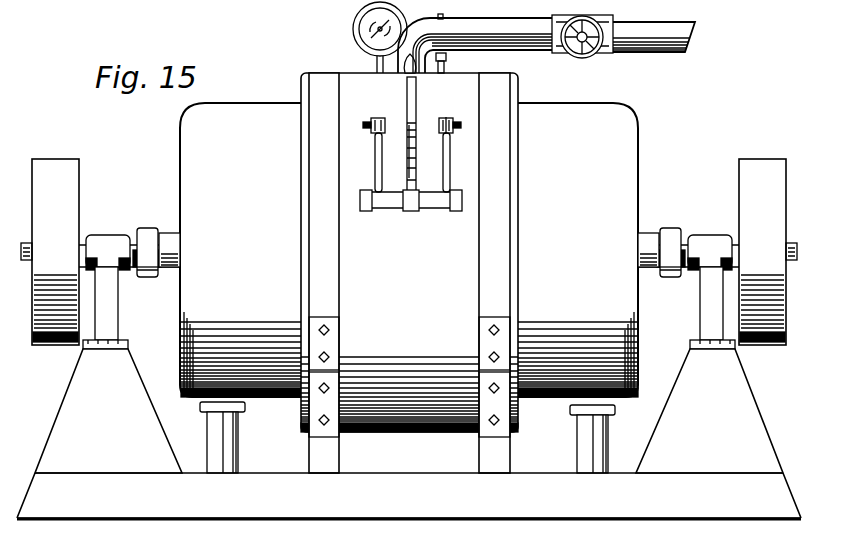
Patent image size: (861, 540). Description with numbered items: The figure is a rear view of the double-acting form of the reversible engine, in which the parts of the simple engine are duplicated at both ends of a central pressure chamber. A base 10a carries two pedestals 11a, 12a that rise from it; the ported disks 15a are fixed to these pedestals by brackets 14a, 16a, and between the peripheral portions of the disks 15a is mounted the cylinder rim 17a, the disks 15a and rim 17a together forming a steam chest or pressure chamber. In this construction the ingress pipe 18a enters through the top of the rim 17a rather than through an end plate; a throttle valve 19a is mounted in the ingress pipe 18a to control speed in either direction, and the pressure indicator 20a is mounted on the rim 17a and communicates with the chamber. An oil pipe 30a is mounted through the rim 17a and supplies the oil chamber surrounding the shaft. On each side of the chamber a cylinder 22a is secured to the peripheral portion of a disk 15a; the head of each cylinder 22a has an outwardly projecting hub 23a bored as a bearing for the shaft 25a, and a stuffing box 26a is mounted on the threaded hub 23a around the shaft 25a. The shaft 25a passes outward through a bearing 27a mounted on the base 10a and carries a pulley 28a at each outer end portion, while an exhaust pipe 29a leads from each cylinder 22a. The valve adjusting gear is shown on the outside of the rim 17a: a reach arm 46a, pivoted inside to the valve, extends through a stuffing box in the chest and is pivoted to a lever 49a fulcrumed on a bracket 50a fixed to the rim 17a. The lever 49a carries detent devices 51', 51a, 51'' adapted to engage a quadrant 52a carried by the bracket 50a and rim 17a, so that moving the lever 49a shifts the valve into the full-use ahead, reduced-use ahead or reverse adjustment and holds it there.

The base 10a is at (409, 434).
The pedestal 11a is at (325, 273).
The pedestal 12a is at (495, 273).
The bracket 14a is at (487, 342).
The ported disk 15a is at (493, 283).
The bracket 16a is at (337, 347).
The rim 17a is at (409, 252).
The ingress pipe 18a is at (685, 33).
The throttle valve 19a is at (603, 55).
The pressure indicator 20a is at (352, 30).
The cylinder 22a is at (409, 250).
The hub 23a is at (648, 252).
The shaft 25a is at (687, 277).
The stuffing box 26a is at (667, 240).
The bearing 27a is at (712, 247).
The pulley 28a is at (409, 252).
The exhaust pipe 29a is at (587, 440).
The oil pipe 30a is at (443, 17).
The reach arm 46a is at (447, 117).
The lever 49a is at (400, 100).
The bracket 50a is at (457, 208).
The detent device 51' is at (416, 155).
The detent device 51a is at (417, 152).
The detent device 51'' is at (411, 213).
The quadrant 52a is at (417, 180).